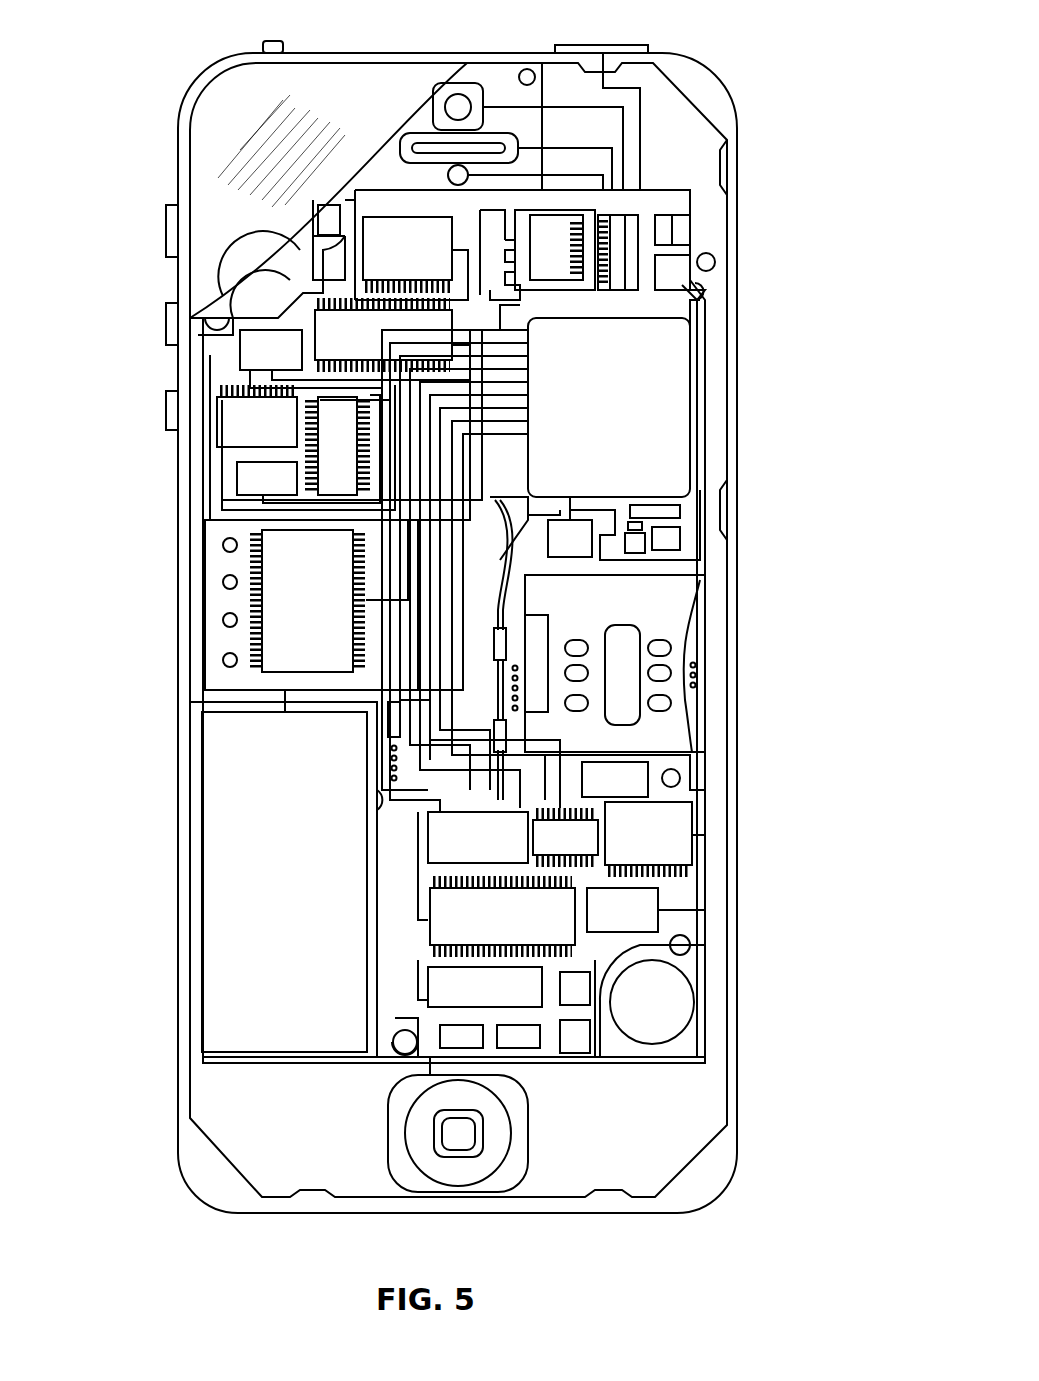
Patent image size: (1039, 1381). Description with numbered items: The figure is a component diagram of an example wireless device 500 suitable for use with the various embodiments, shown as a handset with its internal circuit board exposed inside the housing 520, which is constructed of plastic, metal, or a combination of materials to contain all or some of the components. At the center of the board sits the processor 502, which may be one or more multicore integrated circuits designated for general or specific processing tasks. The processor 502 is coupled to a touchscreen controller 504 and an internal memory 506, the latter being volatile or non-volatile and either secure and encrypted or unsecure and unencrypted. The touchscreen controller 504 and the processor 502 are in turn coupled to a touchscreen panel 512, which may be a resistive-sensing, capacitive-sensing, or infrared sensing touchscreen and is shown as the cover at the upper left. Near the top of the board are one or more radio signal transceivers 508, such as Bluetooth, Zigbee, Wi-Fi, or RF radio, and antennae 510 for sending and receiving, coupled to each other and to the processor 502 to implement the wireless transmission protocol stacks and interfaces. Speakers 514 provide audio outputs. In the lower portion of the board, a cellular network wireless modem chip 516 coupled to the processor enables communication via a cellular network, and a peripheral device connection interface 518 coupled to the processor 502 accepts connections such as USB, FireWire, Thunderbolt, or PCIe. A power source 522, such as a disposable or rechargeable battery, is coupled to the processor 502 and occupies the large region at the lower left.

The wireless device 500 is at (148, 93).
The processor 502 is at (590, 401).
The touchscreen controller 504 is at (411, 258).
The internal memory 506 is at (392, 335).
The radio signal transceivers 508 is at (643, 235).
The antennae 510 is at (688, 275).
The touchscreen panel 512 is at (200, 158).
The speakers 514 is at (420, 133).
The cellular network wireless modem chip 516 is at (502, 916).
The peripheral device connection interface 518 is at (485, 987).
The housing 520 is at (737, 1072).
The power source 522 is at (283, 880).